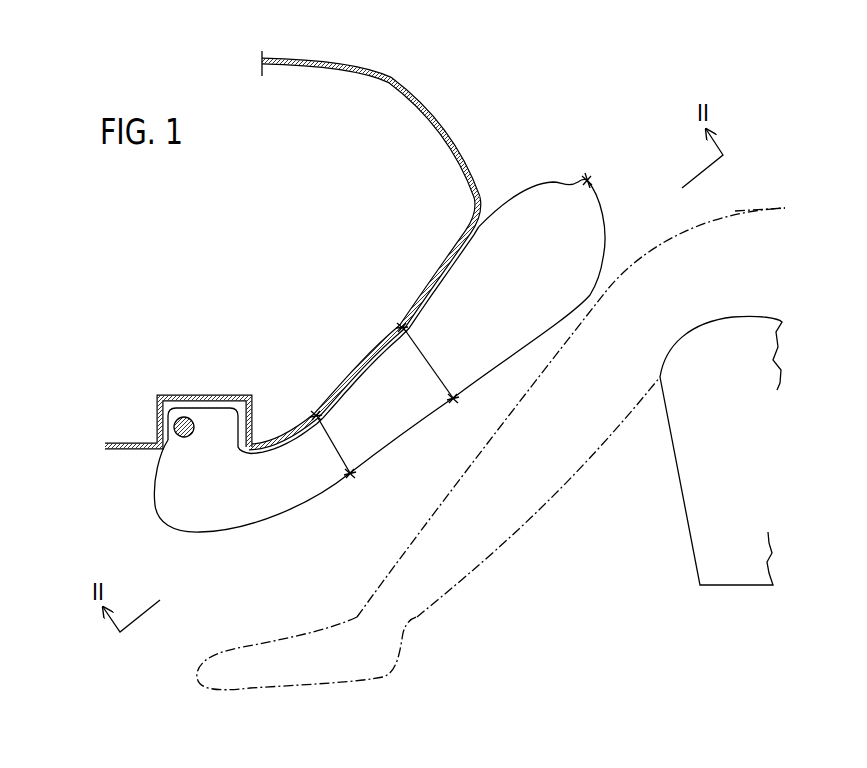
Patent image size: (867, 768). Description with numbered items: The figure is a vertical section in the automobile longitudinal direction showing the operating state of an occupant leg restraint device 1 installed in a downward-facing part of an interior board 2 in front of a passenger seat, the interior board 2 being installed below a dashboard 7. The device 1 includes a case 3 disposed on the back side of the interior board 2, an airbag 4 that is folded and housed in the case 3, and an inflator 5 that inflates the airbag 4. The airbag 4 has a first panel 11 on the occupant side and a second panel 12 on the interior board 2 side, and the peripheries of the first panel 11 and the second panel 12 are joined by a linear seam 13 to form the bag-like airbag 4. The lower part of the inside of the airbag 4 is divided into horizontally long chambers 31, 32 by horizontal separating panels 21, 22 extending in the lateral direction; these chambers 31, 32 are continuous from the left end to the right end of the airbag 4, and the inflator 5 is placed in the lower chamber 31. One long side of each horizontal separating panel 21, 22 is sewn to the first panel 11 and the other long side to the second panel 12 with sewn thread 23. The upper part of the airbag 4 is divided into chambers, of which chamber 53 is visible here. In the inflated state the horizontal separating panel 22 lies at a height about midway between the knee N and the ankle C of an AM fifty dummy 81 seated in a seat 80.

The occupant leg restraint device 1 is at (122, 478).
The interior board 2 is at (341, 370).
The case 3 is at (200, 396).
The airbag 4 is at (379, 339).
The inflator 5 is at (188, 438).
The dashboard 7 is at (376, 70).
The first panel 11 is at (520, 362).
The second panel 12 is at (498, 198).
The linear seam 13 is at (587, 177).
The horizontal separating panel 21 is at (334, 443).
The horizontal separating panel 22 is at (424, 366).
The sewn thread 23 is at (407, 330).
The lower chamber 31 is at (205, 515).
The chamber 32 is at (393, 443).
The chamber 53 is at (516, 305).
The seat 80 is at (685, 522).
The AM 50 dummy 81 is at (750, 210).
The knee N is at (640, 245).
The ankle C is at (355, 608).